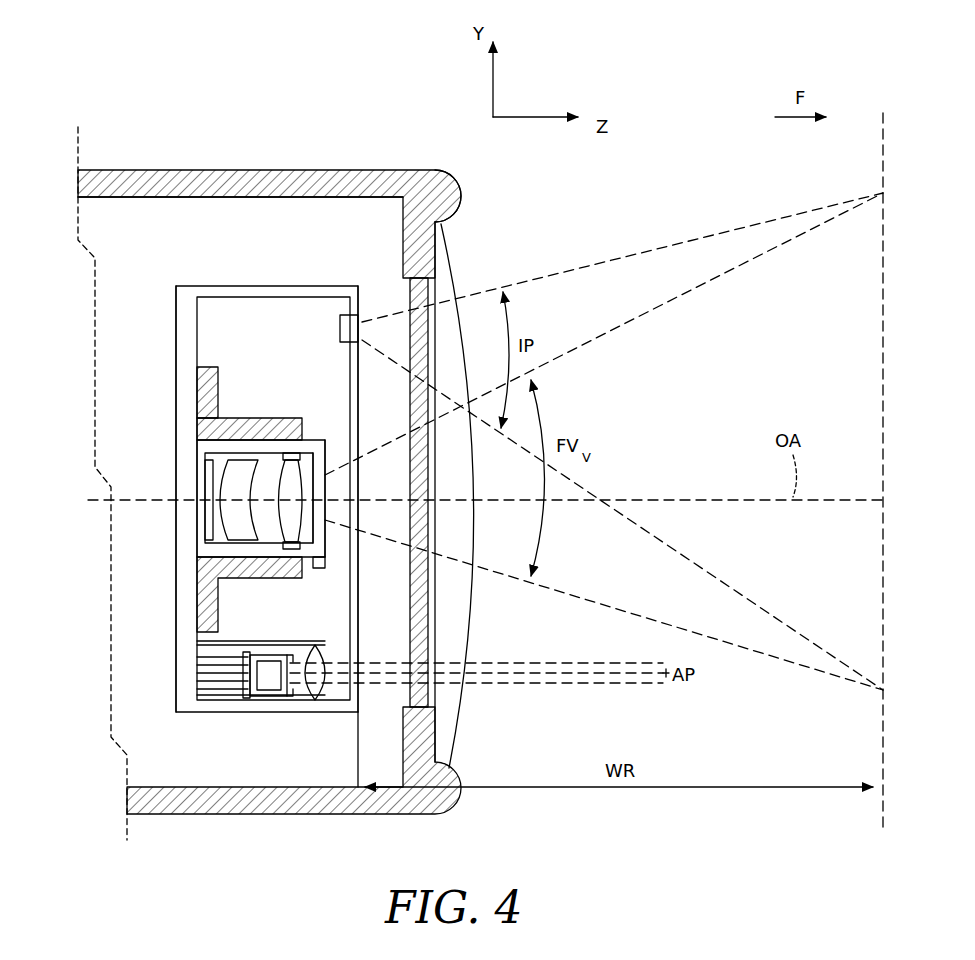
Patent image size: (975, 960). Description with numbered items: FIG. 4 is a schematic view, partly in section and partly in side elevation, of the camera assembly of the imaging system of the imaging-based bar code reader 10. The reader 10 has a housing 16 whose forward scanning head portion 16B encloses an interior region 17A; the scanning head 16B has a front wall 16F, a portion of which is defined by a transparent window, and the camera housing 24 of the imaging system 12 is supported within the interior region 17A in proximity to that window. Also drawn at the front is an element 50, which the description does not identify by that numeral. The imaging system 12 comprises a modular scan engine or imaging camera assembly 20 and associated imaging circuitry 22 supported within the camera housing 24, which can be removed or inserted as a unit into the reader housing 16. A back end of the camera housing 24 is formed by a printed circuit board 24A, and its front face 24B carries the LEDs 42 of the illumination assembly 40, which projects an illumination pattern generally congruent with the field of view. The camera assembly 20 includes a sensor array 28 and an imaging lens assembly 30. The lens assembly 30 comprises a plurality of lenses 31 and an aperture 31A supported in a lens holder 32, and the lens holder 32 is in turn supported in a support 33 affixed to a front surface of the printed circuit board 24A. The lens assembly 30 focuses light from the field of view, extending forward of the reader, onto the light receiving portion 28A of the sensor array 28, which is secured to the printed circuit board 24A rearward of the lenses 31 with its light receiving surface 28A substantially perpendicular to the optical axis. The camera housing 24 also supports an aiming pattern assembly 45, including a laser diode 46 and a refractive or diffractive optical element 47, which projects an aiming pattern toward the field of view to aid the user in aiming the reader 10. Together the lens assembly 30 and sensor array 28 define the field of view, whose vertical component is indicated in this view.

The imaging-based bar code reader 10 is at (123, 152).
The imaging system 12 is at (99, 404).
The housing 16 is at (337, 157).
The scanning head portion 16B is at (272, 170).
The front wall 16F is at (461, 198).
The interior region 17A is at (203, 213).
The imaging camera assembly 20 is at (168, 402).
The imaging circuitry 22 is at (176, 444).
The camera housing 24 is at (189, 373).
The printed circuit board 24A is at (192, 309).
The front face 24B is at (350, 360).
The sensor array 28 is at (205, 512).
The light receiving portion 28A is at (210, 478).
The imaging lens assembly 30 is at (251, 410).
The lenses 31 is at (313, 469).
The aperture 31A is at (326, 472).
The lens holder 32 is at (287, 450).
The support 33 is at (232, 418).
The illumination assembly 40 is at (441, 255).
The LEDs 42 is at (340, 330).
The aiming pattern assembly 45 is at (245, 712).
The laser diode 46 is at (271, 698).
The optical element 47 is at (315, 647).
The housing bottom wall 50 is at (438, 696).